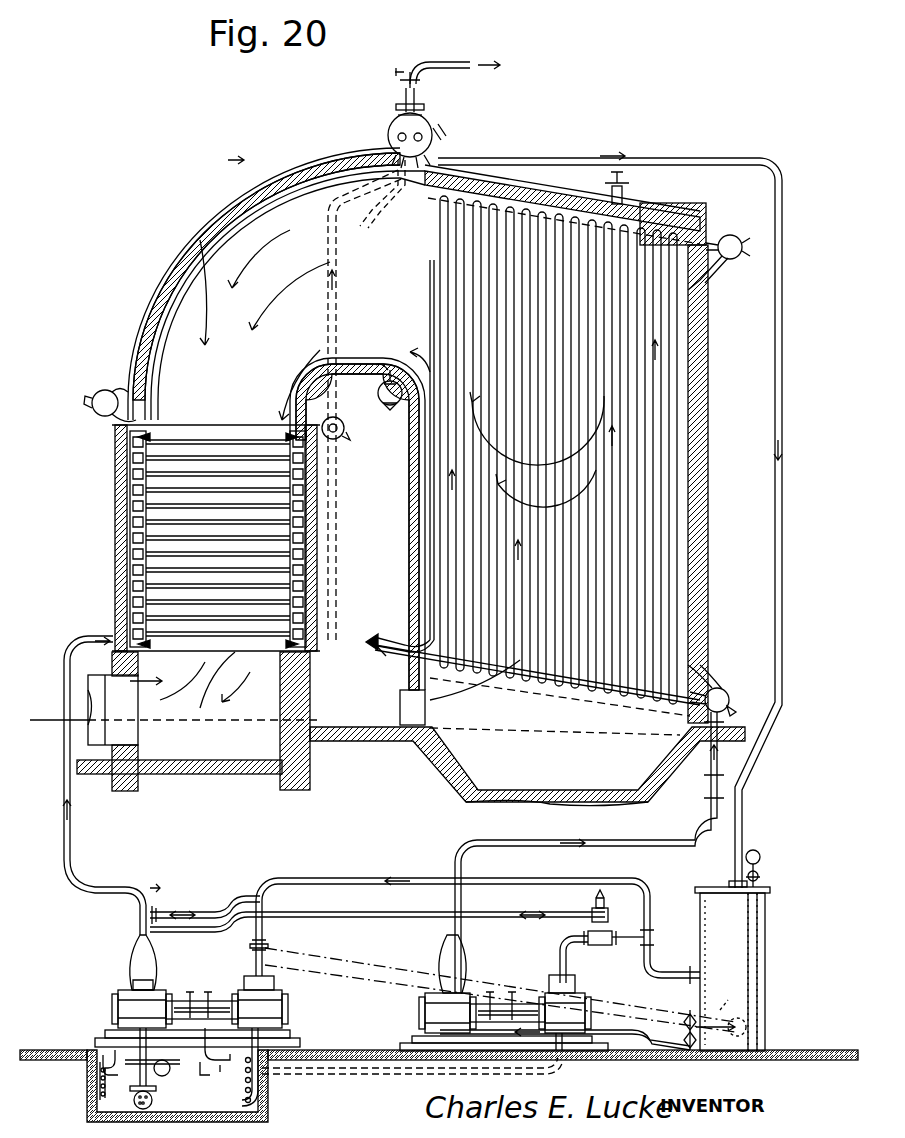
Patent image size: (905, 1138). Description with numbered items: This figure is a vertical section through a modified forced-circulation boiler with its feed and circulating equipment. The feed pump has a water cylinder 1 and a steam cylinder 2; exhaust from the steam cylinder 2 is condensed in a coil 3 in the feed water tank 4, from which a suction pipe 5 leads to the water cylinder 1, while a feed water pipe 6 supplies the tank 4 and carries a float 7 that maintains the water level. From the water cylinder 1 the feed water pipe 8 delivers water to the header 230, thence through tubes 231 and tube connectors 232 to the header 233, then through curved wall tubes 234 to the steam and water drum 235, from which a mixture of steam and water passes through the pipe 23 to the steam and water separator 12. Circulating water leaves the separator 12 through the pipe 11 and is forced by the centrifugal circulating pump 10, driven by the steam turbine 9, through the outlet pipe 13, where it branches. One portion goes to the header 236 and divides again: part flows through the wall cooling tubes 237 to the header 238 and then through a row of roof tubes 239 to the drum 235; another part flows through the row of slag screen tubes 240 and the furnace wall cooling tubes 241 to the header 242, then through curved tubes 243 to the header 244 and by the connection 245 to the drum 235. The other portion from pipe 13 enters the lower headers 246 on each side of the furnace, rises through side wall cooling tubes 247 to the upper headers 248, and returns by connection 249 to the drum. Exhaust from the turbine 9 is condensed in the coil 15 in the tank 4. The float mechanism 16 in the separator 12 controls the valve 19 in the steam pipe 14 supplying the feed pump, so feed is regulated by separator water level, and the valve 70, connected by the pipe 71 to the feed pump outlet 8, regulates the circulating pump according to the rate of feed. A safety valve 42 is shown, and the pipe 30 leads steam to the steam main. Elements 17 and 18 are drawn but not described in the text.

The water cylinder of feed pump 1 is at (130, 998).
The steam cylinder of feed pump 2 is at (300, 1000).
The coil 3 is at (100, 1082).
The feed water tank 4 is at (176, 1112).
The suction pipe 5 is at (150, 1082).
The feed water pipe 6 is at (220, 1066).
The float 7 is at (188, 1076).
The feed water pipe 8 is at (66, 855).
The steam turbine 9 is at (580, 1006).
The centrifugal circulating pump 10 is at (430, 1010).
The pipe 11 is at (640, 1054).
The steam and water separator 12 is at (760, 958).
The outlet pipe 13 is at (514, 850).
The steam pipe 14 is at (366, 880).
The coil 15 is at (262, 1084).
The float mechanism 16 is at (729, 1011).
The valve 17 is at (684, 1024).
The control connection 18 is at (618, 1008).
The valve 19 is at (266, 948).
The pipe 23 is at (566, 162).
The pipe 30 is at (432, 76).
The safety valve 42 is at (400, 82).
The valve 70 is at (604, 944).
The pipe 71 is at (490, 924).
The header 230 is at (135, 652).
The tubes 231 is at (203, 680).
The tube connectors 232 is at (132, 502).
The header 233 is at (95, 414).
The curved wall tubes 234 is at (160, 318).
The steam and water drum 235 is at (433, 132).
The header 236 is at (712, 676).
The wall cooling tubes 237 is at (698, 562).
The header 238 is at (733, 262).
The roof tubes 239 is at (650, 216).
The slag screen tubes 240 is at (588, 694).
The furnace wall cooling tubes 241 is at (408, 592).
The header 242 is at (378, 412).
The curved tubes 243 is at (350, 354).
The header 244 is at (326, 440).
The connection 245 is at (340, 266).
The lower headers 246 is at (508, 686).
The side wall cooling tubes 247 is at (642, 488).
The upper headers 248 is at (530, 204).
The connection 249 is at (402, 222).